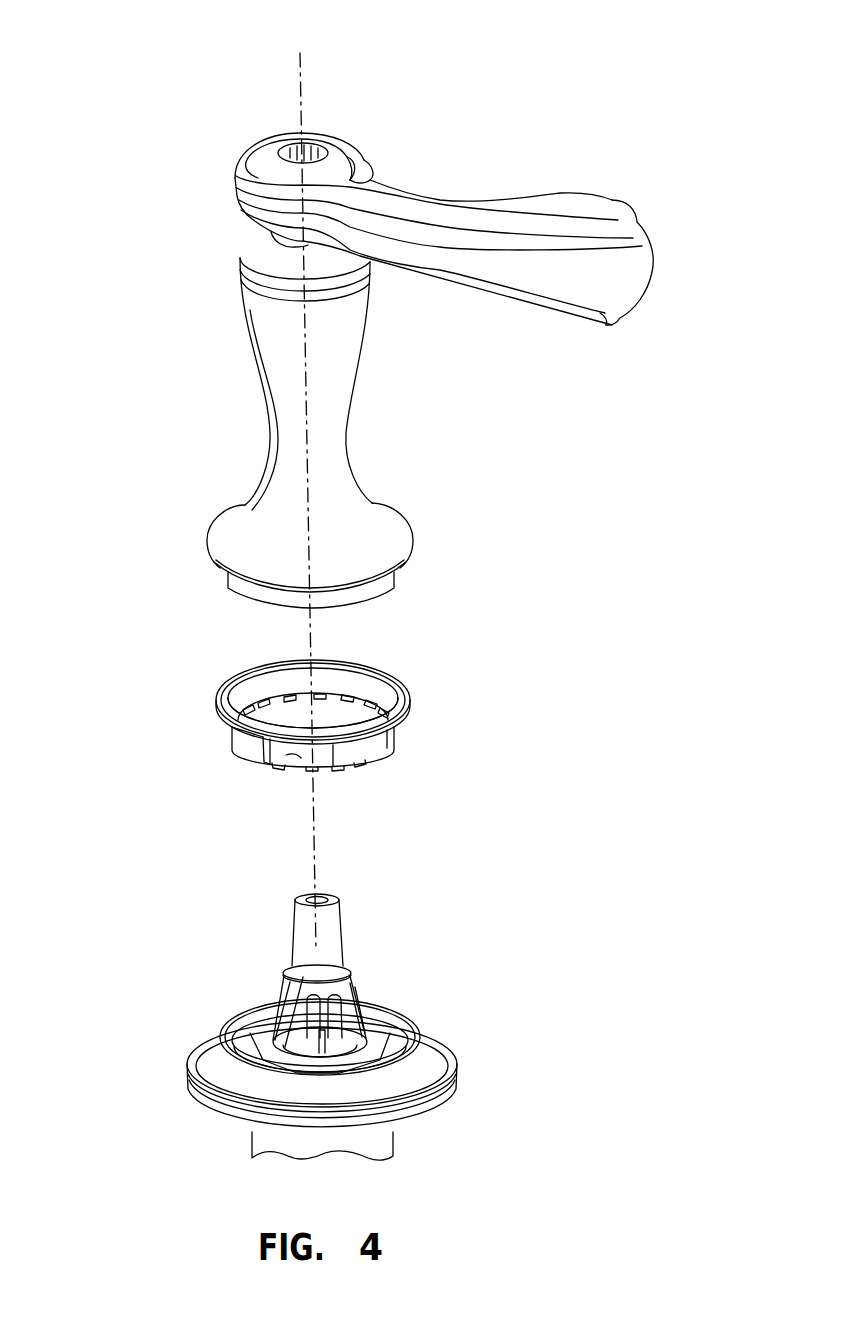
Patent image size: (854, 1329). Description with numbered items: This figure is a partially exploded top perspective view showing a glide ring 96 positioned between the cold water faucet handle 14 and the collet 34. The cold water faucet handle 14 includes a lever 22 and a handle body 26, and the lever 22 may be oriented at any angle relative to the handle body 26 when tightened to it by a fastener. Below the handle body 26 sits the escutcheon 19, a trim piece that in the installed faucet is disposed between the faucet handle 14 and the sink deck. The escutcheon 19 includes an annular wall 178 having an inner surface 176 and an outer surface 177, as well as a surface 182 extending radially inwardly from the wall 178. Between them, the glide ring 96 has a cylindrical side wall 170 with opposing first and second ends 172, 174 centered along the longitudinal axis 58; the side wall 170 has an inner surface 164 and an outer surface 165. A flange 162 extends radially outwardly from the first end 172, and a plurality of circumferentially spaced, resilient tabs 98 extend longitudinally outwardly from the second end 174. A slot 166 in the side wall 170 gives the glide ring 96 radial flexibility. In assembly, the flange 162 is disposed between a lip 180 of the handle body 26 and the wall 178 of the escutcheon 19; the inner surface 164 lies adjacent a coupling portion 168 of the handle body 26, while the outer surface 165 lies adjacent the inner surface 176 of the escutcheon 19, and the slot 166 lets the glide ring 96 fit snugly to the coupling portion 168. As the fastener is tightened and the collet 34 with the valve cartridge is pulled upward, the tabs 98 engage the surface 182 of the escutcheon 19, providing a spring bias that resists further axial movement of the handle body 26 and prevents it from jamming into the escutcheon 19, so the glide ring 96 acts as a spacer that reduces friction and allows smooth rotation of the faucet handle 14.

The cold water faucet handle 14 is at (367, 206).
The lever 22 is at (444, 229).
The handle body 26 is at (337, 397).
The longitudinal axis 58 is at (293, 82).
The lip 180 is at (224, 534).
The coupling portion 168 is at (386, 581).
The glide ring 96 is at (333, 735).
The flange 162 is at (313, 702).
The inner surface 164 is at (268, 692).
The first end 172 is at (313, 710).
The second end 174 is at (313, 747).
The cylindrical side wall 170 is at (243, 740).
The slot 166 is at (250, 760).
The outer surface 165 is at (290, 765).
The tabs 98 is at (282, 768).
The collet 34 is at (307, 1019).
The inner surface 176 is at (390, 1033).
The surface 182 is at (245, 1045).
The annular wall 178 is at (225, 1023).
The escutcheon 19 is at (435, 1048).
The outer surface 177 is at (410, 1082).